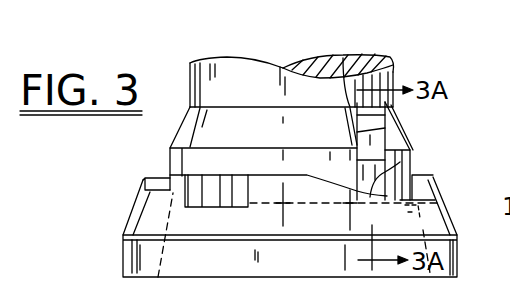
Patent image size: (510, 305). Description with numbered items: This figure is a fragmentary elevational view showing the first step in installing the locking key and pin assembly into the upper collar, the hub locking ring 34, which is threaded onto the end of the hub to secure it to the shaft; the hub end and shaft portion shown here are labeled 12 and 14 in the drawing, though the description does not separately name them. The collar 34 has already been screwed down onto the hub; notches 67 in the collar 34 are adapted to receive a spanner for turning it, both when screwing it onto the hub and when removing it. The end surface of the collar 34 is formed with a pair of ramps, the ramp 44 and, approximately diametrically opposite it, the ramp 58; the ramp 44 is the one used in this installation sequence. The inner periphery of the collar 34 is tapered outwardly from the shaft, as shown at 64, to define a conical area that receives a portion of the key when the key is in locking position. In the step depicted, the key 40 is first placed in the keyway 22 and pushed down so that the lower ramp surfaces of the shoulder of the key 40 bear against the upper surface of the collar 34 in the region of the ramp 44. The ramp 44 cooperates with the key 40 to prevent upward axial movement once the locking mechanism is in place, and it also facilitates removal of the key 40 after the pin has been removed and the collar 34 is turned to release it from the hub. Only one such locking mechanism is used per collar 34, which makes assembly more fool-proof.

The cap 12 is at (262, 57).
The keyway 22 is at (341, 58).
The body 14 is at (170, 153).
The key 40 is at (380, 123).
The ramp 44 is at (380, 185).
The tapered inner periphery 64 is at (442, 190).
The ramp 58 is at (185, 197).
The notches 67 is at (220, 188).
The hub locking ring 34 is at (452, 250).